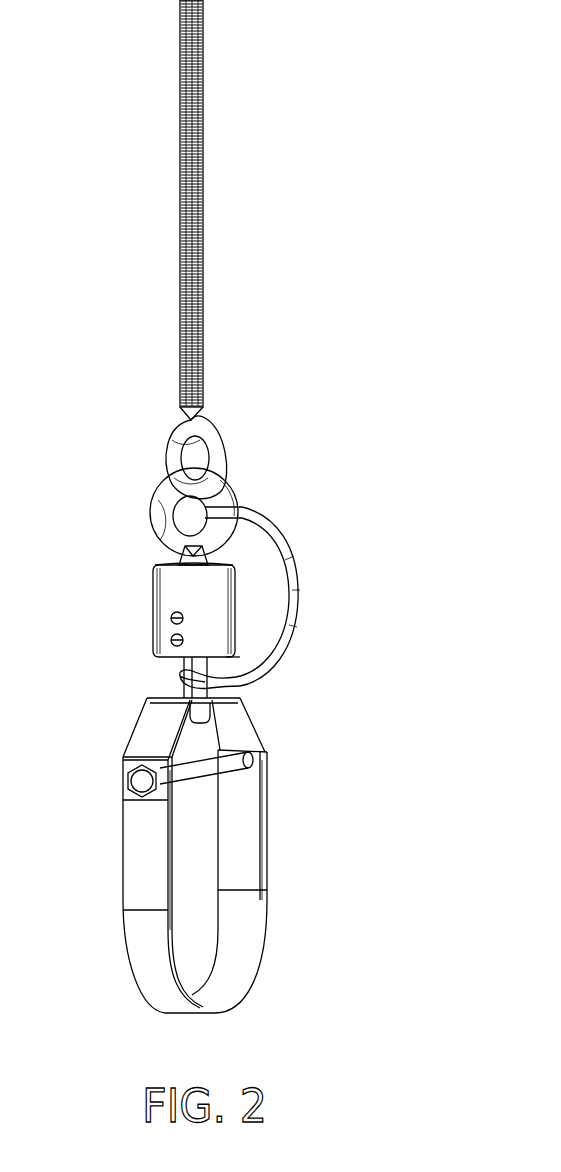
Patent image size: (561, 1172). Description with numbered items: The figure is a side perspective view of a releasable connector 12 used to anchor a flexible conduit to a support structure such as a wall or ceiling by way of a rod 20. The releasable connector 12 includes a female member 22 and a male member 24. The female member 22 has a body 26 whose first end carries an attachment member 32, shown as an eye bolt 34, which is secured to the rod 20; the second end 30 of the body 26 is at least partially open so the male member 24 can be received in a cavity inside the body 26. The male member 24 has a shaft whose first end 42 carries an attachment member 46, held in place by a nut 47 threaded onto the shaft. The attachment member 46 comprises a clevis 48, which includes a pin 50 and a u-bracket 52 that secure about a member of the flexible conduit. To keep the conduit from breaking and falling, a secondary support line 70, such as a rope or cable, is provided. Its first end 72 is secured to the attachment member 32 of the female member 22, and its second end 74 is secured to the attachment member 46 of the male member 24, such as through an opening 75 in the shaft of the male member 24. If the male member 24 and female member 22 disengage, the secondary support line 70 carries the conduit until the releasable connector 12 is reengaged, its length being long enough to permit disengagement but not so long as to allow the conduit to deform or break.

The releasable connector 12 is at (350, 640).
The rod 20 is at (203, 117).
The female member 22 is at (168, 560).
The male member 24 is at (184, 664).
The body 26 is at (154, 610).
The second end 30 is at (226, 657).
The attachment member 32 is at (220, 493).
The eye bolt 34 is at (155, 501).
The first end 42 is at (247, 703).
The attachment member 46 is at (245, 708).
The nut 47 is at (178, 712).
The clevis 48 is at (252, 757).
The pin 50 is at (190, 778).
The u-bracket 52 is at (143, 883).
The secondary support line 70 is at (297, 585).
The first end 72 is at (240, 514).
The second end 74 is at (216, 681).
The opening 75 is at (186, 676).